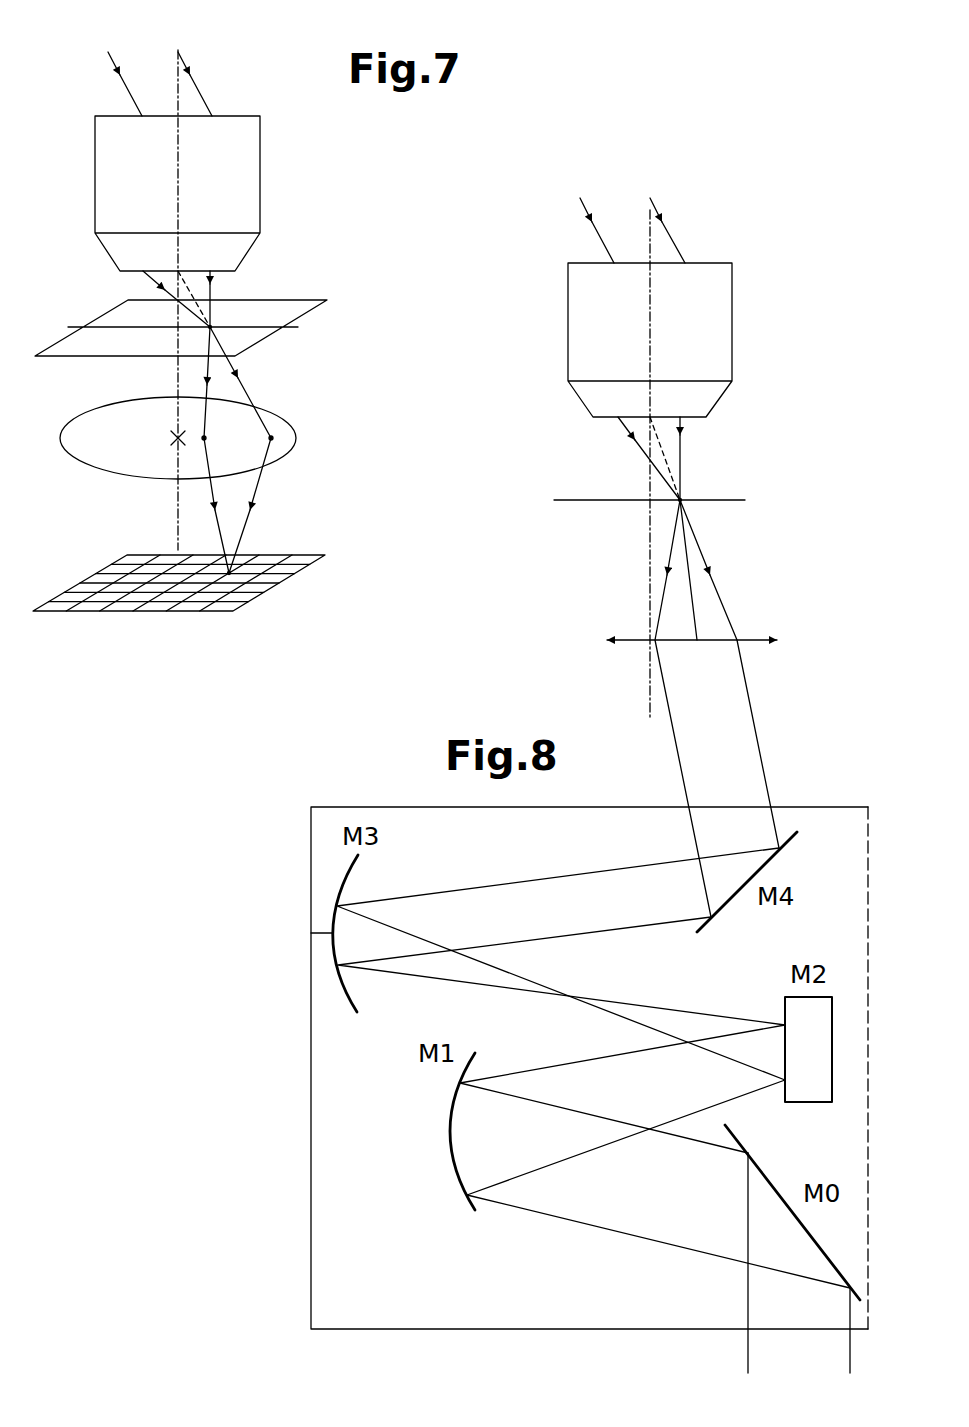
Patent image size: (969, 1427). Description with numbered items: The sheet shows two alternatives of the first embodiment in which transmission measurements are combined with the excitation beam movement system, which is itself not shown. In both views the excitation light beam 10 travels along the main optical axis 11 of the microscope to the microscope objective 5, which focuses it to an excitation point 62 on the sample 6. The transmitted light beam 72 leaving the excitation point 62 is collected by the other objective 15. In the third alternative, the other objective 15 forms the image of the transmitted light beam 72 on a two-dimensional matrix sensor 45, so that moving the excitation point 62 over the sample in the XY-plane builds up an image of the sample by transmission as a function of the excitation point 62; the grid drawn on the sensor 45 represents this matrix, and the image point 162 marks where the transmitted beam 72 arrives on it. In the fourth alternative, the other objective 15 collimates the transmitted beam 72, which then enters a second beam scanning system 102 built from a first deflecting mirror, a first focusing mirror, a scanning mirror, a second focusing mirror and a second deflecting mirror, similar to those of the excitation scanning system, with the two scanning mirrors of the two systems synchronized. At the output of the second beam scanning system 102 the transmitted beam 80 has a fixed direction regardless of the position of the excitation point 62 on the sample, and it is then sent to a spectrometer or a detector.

In FIG. 7, the excitation light beam 10 is at (133, 97).
In FIG. 8, the excitation light beam 10 is at (585, 207).
In FIG. 7, the microscope objective 5 is at (261, 170).
In FIG. 8, the microscope objective 5 is at (717, 297).
In FIG. 7, the sample 6 is at (310, 300).
In FIG. 8, the sample 6 is at (590, 500).
In FIG. 7, the excitation point 62 is at (210, 327).
In FIG. 8, the excitation point 62 is at (680, 500).
In FIG. 7, the main optical axis 11 is at (178, 367).
In FIG. 8, the main optical axis 11 is at (650, 483).
In FIG. 7, the other objective 15 is at (297, 432).
In FIG. 8, the other objective 15 is at (637, 640).
In FIG. 7, the transmitted light beam 72 is at (210, 487).
In FIG. 8, the transmitted light beam 72 is at (727, 617).
In FIG. 7, the image point 162 is at (229, 573).
In FIG. 7, the two-dimensional matrix sensor 45 is at (255, 597).
In FIG. 8, the second beam scanning system 102 is at (311, 1204).
In FIG. 8, the transmitted beam 80 is at (748, 1347).